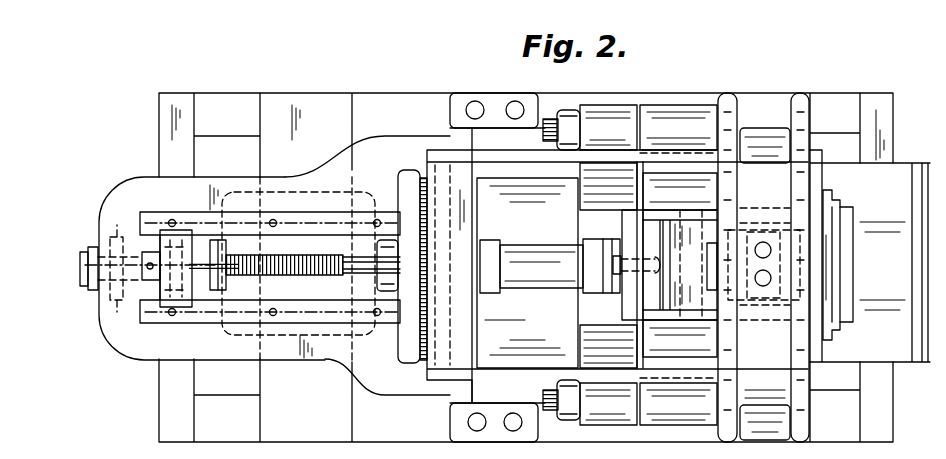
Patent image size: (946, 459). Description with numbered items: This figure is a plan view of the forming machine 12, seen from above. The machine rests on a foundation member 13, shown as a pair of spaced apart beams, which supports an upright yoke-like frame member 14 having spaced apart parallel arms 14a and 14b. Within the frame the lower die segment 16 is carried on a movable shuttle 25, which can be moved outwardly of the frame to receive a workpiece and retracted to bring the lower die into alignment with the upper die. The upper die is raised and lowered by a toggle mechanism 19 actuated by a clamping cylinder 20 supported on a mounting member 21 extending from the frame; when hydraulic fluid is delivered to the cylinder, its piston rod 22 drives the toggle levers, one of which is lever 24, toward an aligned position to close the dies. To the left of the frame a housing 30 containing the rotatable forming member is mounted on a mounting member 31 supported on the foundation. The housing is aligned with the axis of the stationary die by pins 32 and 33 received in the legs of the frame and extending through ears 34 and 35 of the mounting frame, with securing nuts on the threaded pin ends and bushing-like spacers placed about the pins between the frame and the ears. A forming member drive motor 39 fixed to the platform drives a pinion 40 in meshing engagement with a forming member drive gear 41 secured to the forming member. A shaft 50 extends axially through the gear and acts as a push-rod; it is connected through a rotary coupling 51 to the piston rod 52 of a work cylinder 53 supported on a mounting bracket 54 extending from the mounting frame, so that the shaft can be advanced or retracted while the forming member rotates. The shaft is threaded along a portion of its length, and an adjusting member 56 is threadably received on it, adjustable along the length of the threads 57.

The machine 12 is at (402, 84).
The foundation member 13 is at (220, 105).
The frame member 14 is at (752, 121).
The frame arm 14a is at (777, 400).
The frame arm 14b is at (774, 128).
The lower die segment 16 is at (884, 200).
The toggle mechanism 19 is at (661, 291).
The clamping cylinder 20 is at (528, 263).
The mounting member 21 is at (527, 371).
The piston rod 22 is at (620, 263).
The lever 24 is at (683, 262).
The shuttle 25 is at (917, 350).
The housing 30 is at (505, 188).
The mounting member 31 is at (488, 130).
The pin 32 is at (552, 410).
The pin 33 is at (548, 121).
The ear 34 is at (601, 412).
The ear 35 is at (598, 142).
The forming member drive motor 39 is at (354, 198).
The pinion 40 is at (430, 298).
The forming member drive gear 41 is at (420, 182).
The shaft 50 is at (363, 257).
The rotary coupling 51 is at (184, 245).
The piston rod 52 is at (126, 300).
The work cylinder 53 is at (90, 248).
The mounting bracket 54 is at (303, 188).
The adjusting member 56 is at (221, 280).
The threads 57 is at (326, 277).